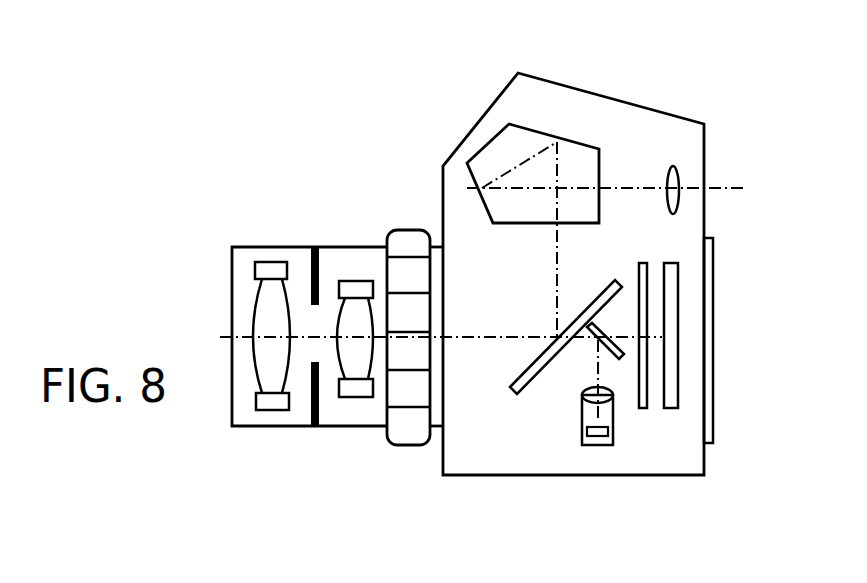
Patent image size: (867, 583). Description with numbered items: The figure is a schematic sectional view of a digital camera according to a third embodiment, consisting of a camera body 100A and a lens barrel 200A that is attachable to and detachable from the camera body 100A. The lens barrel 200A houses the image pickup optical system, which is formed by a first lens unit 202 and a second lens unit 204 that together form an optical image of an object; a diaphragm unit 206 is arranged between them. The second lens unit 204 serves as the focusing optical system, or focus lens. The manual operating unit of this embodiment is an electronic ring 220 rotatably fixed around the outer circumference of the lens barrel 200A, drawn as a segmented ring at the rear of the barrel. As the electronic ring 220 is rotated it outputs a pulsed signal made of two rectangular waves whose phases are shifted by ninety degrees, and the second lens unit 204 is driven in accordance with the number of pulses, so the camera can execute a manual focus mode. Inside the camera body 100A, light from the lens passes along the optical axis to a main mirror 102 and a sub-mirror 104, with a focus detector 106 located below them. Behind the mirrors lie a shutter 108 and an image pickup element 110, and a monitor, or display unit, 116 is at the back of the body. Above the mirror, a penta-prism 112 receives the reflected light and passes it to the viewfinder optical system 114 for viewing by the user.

The camera body 100A is at (480, 138).
The main mirror 102 is at (540, 365).
The sub-mirror 104 is at (622, 359).
The focus detector 106 is at (598, 446).
The shutter 108 is at (645, 383).
The image pickup element 110 is at (670, 387).
The penta-prism 112 is at (521, 137).
The viewfinder optical system 114 is at (669, 168).
The monitor (display unit) 116 is at (715, 237).
The lens barrel 200A is at (358, 257).
The first lens unit 202 is at (273, 385).
The second lens unit 204 is at (357, 372).
The diaphragm unit 206 is at (310, 408).
The electronic ring 220 is at (407, 422).